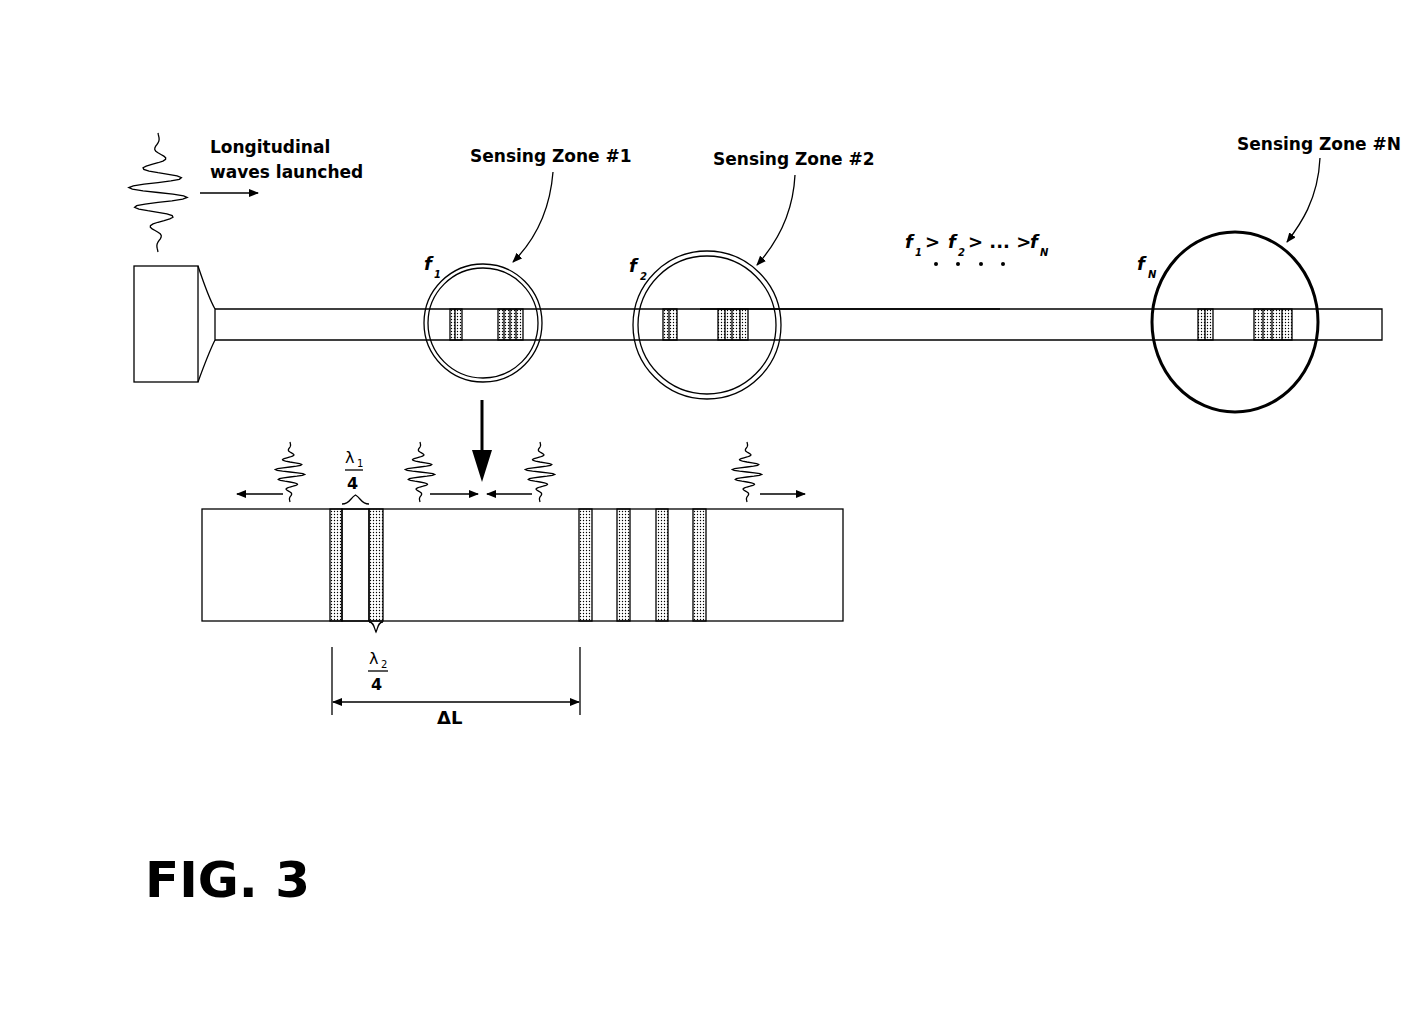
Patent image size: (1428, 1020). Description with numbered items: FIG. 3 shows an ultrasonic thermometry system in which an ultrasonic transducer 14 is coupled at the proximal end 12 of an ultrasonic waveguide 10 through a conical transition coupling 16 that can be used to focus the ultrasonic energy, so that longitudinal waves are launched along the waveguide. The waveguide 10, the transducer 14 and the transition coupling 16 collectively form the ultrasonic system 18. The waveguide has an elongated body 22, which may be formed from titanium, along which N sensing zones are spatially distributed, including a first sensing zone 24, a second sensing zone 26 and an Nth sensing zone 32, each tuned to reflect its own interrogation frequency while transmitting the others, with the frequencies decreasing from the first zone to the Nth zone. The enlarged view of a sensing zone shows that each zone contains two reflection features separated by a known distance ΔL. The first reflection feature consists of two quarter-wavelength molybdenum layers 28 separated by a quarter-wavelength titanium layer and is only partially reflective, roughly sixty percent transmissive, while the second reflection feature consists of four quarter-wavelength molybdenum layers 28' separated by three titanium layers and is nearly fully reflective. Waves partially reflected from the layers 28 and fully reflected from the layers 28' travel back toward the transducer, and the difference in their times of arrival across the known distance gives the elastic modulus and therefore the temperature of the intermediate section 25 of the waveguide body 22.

The ultrasonic waveguide 10 is at (822, 309).
The proximal end 12 is at (215, 309).
The ultrasonic transducer 14 is at (134, 304).
The conical transition coupling 16 is at (207, 362).
The sensor system 18 is at (655, 97).
The elongated body 22 is at (900, 335).
The first sensing zone 24 is at (538, 292).
The intermediate section 25 is at (478, 578).
The second sensing zone 26 is at (722, 253).
The quarter-wavelength layers 28 is at (316, 601).
The quarter-wavelength layers 28' is at (642, 528).
The sensing zone N reflector grating 32 is at (1210, 237).